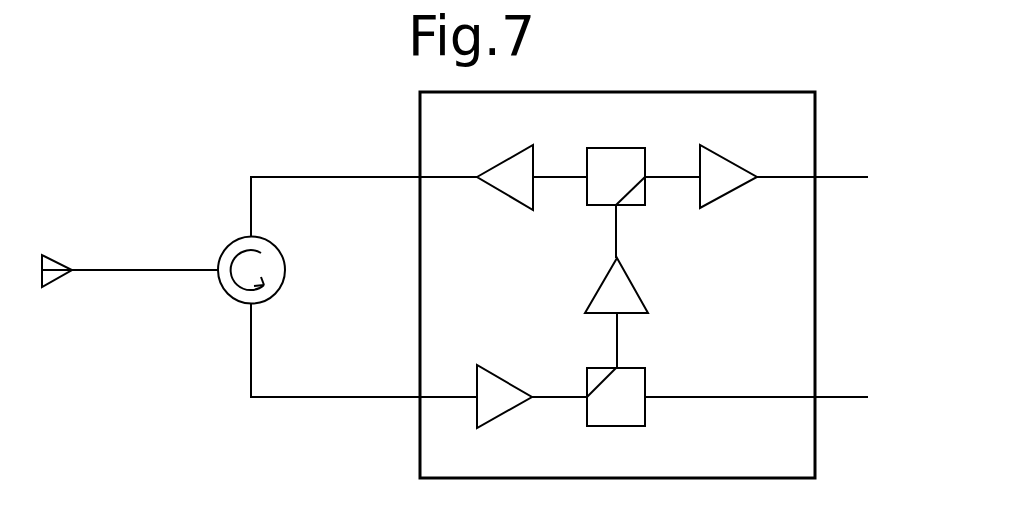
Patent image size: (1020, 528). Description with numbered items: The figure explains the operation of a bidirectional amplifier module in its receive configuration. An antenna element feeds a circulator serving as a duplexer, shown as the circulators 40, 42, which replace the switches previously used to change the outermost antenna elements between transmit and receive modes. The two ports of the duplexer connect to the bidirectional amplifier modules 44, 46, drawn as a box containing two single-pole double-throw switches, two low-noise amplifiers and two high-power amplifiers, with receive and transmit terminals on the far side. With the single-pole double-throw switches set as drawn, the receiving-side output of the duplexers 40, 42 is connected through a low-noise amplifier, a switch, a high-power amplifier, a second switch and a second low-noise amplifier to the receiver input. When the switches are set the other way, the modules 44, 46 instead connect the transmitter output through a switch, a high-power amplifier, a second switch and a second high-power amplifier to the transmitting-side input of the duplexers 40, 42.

The circulator 40 is at (210, 285).
The circulator 42 is at (236, 300).
The bidirectional amplifier module 44 is at (613, 285).
The bidirectional amplifier module 46 is at (420, 440).